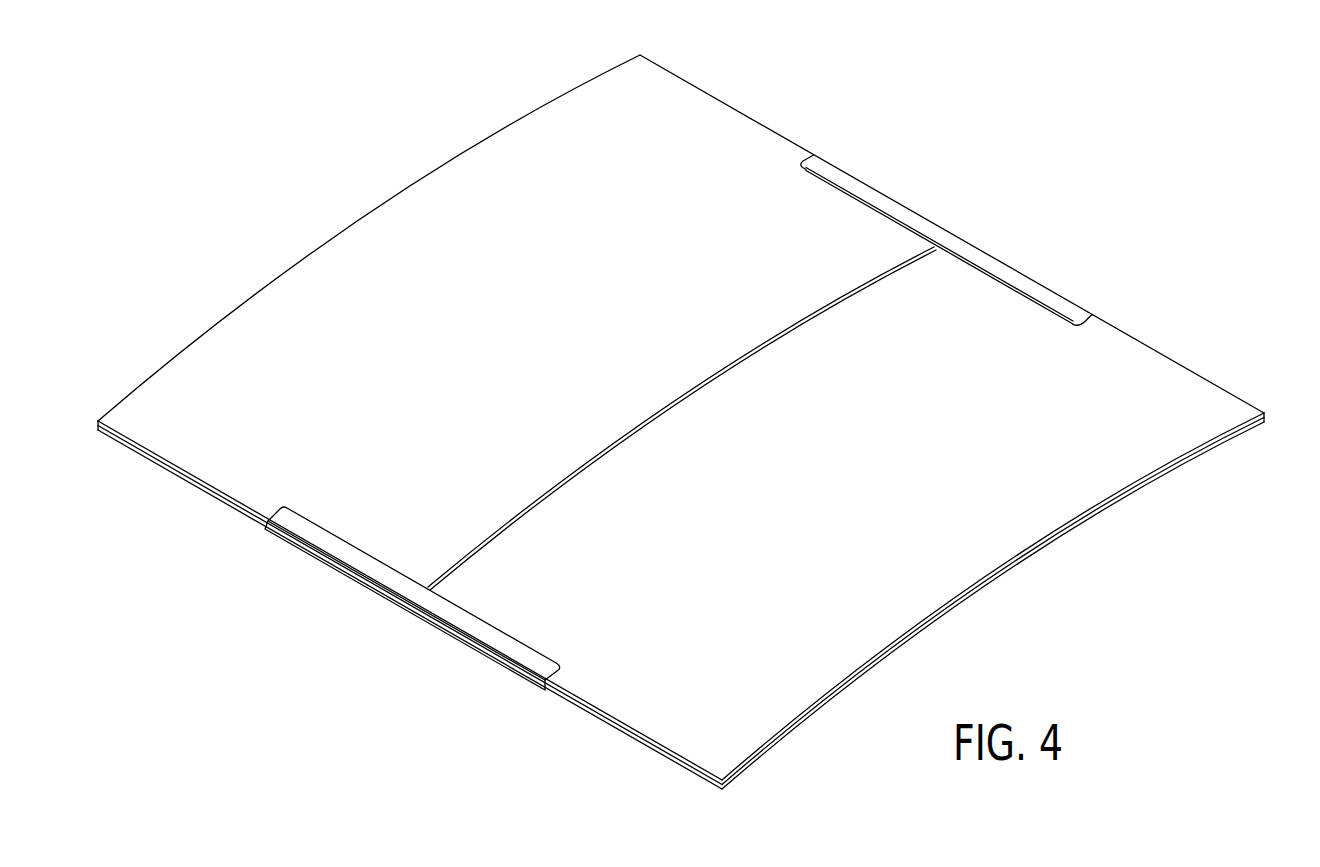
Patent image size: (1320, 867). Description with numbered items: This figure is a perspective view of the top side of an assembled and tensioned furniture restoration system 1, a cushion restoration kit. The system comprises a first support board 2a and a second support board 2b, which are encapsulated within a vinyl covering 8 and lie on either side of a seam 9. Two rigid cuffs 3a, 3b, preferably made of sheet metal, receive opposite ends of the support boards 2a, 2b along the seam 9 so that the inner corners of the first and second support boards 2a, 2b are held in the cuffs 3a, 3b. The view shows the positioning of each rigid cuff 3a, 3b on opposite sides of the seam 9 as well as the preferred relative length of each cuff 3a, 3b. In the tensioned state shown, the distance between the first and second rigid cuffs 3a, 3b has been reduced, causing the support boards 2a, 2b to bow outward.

The furniture restoration system 1 is at (686, 422).
The first support board 2a is at (146, 381).
The second support board 2b is at (803, 730).
The first rigid cuff 3a is at (1065, 302).
The second rigid cuff 3b is at (508, 667).
The vinyl covering 8 is at (1218, 388).
The seam 9 is at (668, 396).